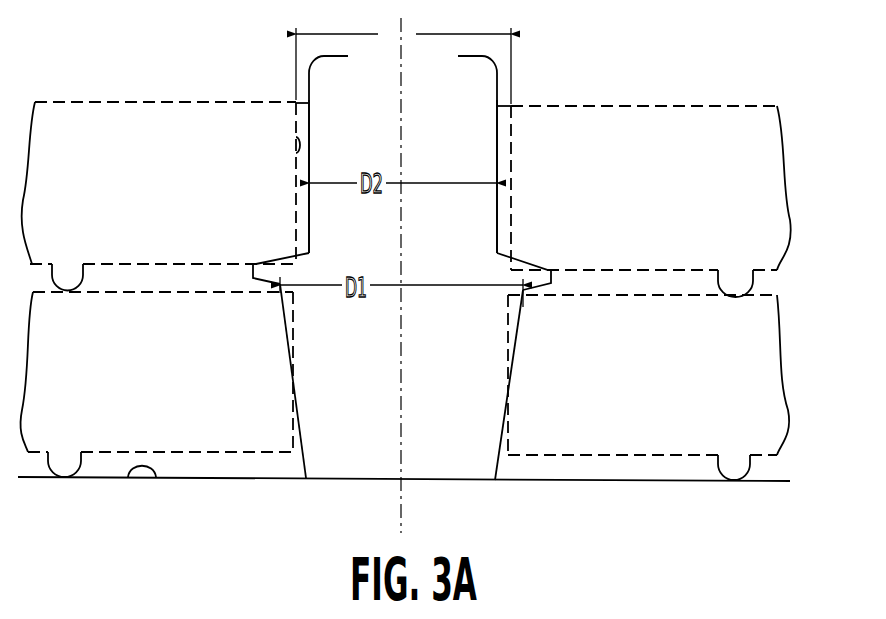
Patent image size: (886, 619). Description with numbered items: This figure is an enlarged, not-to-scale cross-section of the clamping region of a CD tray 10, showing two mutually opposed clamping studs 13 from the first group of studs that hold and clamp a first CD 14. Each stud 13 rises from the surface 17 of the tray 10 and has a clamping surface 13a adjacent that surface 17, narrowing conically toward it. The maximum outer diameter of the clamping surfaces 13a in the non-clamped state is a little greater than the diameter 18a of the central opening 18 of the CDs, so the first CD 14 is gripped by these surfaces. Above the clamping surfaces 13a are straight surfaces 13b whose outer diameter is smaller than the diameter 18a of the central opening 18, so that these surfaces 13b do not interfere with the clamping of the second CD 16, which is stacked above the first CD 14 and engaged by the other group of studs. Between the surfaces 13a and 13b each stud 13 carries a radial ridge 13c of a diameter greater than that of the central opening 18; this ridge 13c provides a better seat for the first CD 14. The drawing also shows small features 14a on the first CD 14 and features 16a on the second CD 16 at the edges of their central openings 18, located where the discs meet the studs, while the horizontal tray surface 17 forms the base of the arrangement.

The tray 10 is at (350, 480).
The clamping stud 13 is at (312, 80).
The clamping surface 13a is at (283, 323).
The straight surface 13b is at (308, 227).
The radial ridge 13c is at (545, 274).
The first CD 14 is at (678, 295).
The lower protrusion 14a is at (63, 462).
The second CD 16 is at (680, 105).
The upper protrusion 16a is at (65, 277).
The surface of the tray 17 is at (156, 477).
The central opening 18 is at (293, 147).
The diameter of the central opening 18a is at (403, 63).